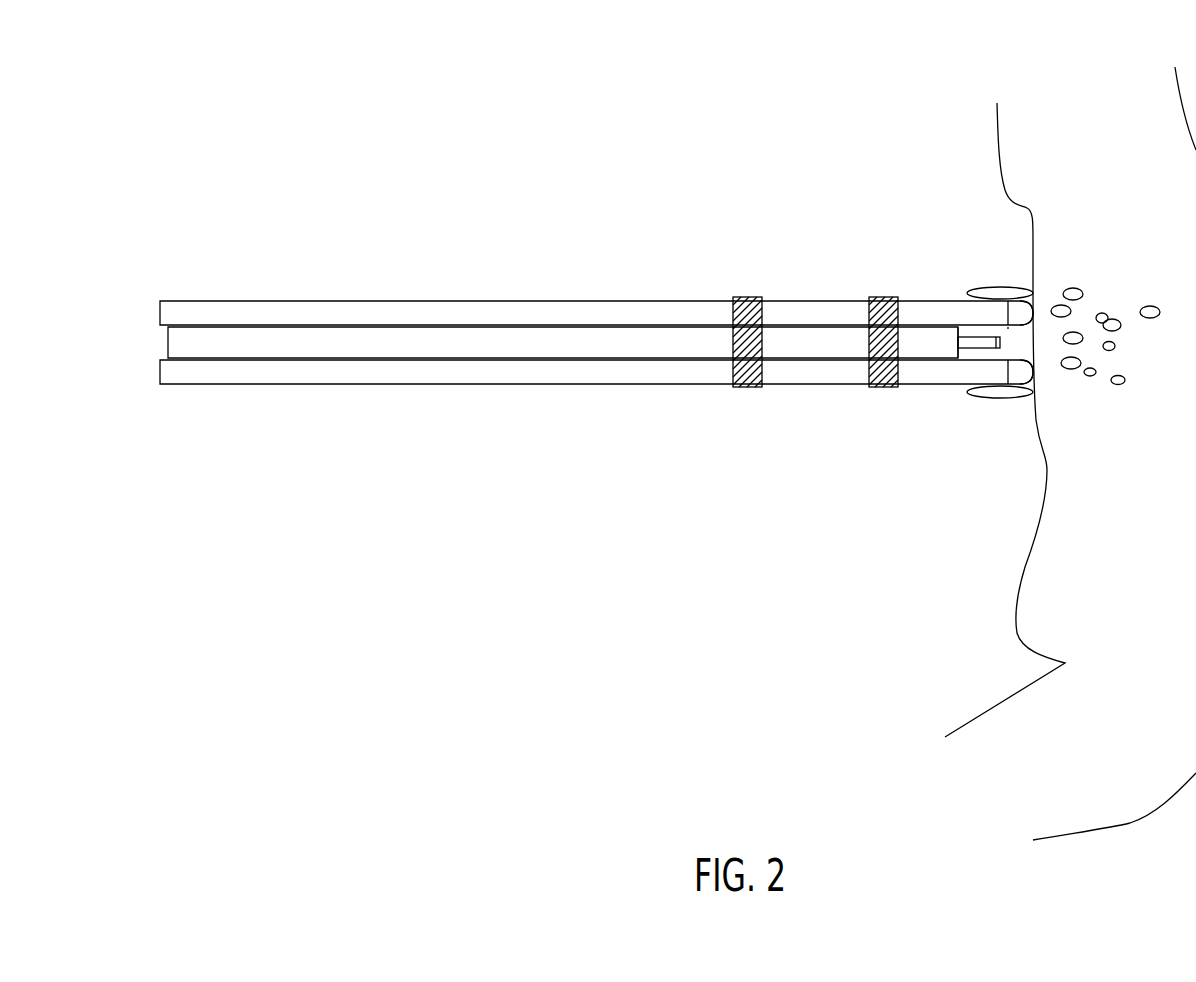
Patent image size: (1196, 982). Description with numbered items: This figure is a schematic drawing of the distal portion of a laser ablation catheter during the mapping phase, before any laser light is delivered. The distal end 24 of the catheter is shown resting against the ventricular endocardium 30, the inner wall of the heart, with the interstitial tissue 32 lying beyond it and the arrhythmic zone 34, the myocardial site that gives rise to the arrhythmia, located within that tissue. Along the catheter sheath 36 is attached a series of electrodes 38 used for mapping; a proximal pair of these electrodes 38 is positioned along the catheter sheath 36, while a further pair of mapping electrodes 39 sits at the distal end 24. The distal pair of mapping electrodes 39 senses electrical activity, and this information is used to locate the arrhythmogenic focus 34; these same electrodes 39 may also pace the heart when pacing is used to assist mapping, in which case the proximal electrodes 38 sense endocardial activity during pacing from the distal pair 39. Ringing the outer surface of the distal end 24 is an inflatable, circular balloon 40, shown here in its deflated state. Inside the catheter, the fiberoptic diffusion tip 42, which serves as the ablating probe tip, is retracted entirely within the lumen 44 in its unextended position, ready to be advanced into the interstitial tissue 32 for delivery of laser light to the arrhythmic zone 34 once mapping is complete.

The distal end 24 is at (1017, 342).
The ventricular endocardium 30 is at (998, 142).
The interstitial tissue 32 is at (1070, 436).
The arrhythmic zone 34 is at (1105, 395).
The catheter sheath 36 is at (513, 300).
The electrodes 38 is at (748, 389).
The pair of mapping electrodes 39 is at (1018, 311).
The inflatable circular balloon 40 is at (970, 292).
The fiberoptic diffusion tip 42 is at (975, 342).
The lumen 44 is at (385, 342).